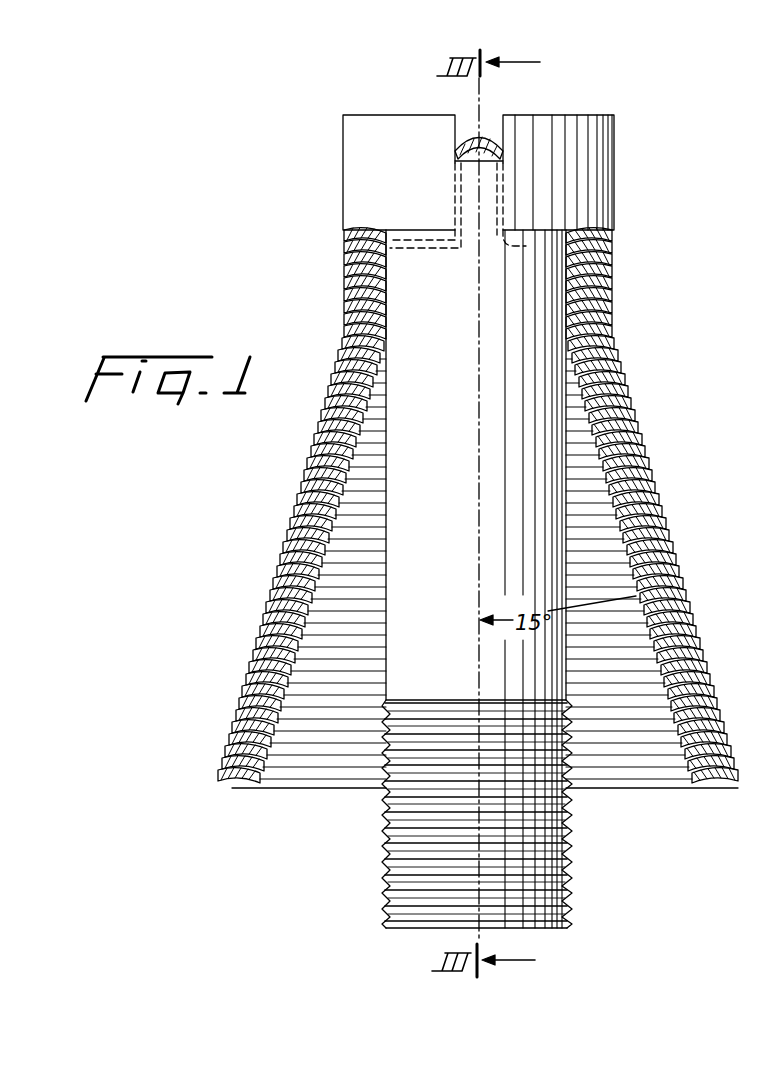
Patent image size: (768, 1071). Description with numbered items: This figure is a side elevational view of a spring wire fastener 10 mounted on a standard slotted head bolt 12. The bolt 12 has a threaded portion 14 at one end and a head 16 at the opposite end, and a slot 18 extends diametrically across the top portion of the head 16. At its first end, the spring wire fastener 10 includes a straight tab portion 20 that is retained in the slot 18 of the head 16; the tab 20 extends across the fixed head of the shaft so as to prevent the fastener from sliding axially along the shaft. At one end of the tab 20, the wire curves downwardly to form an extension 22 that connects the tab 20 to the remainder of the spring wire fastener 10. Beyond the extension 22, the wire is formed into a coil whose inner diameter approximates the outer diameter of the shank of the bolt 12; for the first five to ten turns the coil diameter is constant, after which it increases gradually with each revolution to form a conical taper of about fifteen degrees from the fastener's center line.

The spring wire fastener 10 is at (332, 304).
The slotted head bolt 12 is at (391, 581).
The threaded portion 14 is at (385, 791).
The head 16 is at (346, 181).
The slot 18 is at (512, 120).
The straight tab portion 20 is at (459, 136).
The extension 22 is at (505, 190).